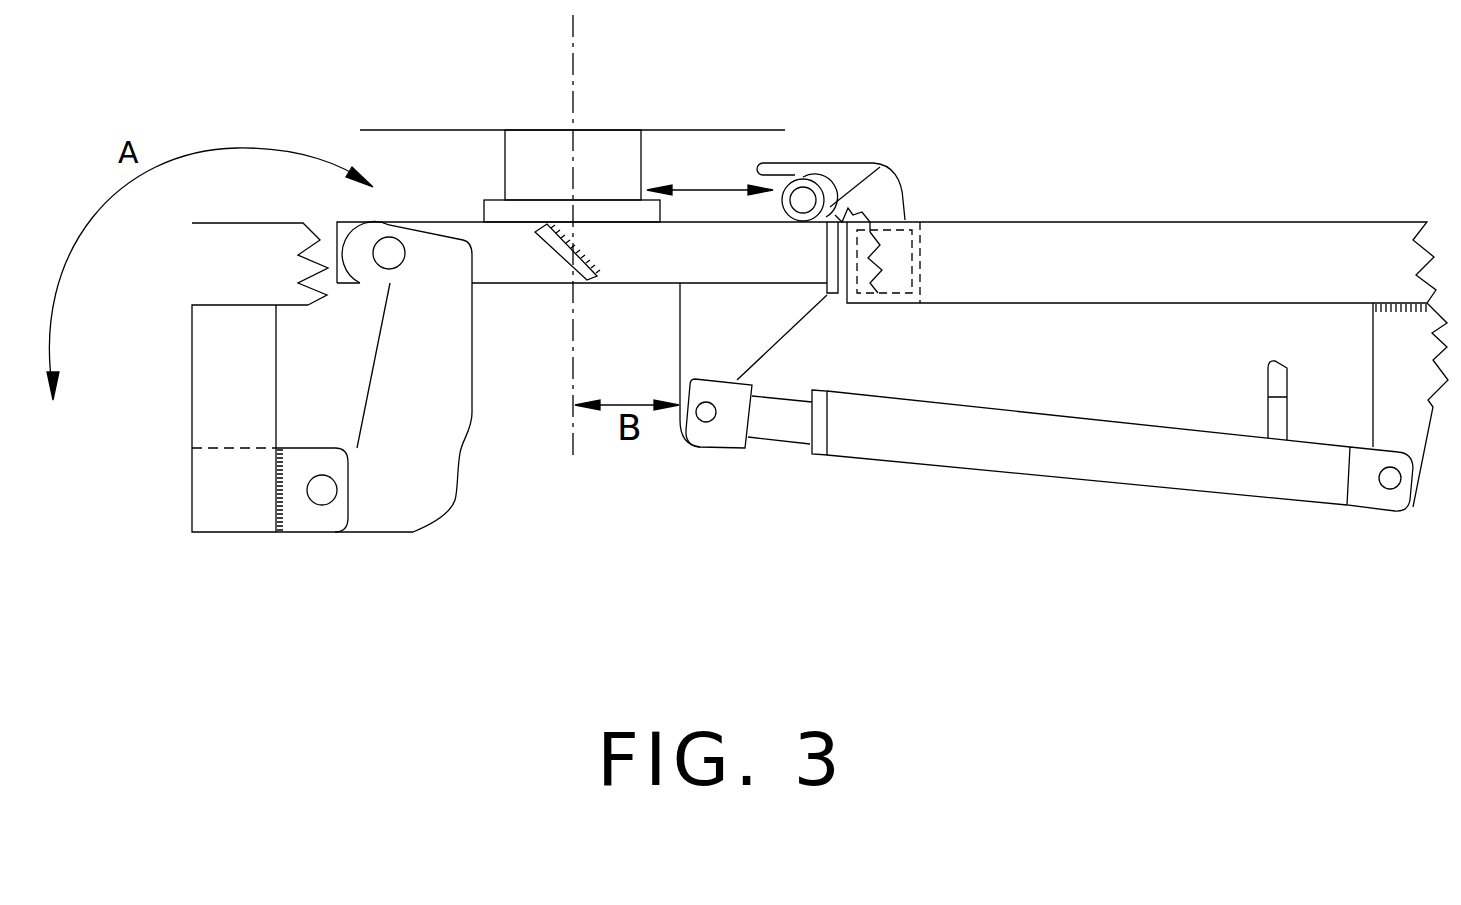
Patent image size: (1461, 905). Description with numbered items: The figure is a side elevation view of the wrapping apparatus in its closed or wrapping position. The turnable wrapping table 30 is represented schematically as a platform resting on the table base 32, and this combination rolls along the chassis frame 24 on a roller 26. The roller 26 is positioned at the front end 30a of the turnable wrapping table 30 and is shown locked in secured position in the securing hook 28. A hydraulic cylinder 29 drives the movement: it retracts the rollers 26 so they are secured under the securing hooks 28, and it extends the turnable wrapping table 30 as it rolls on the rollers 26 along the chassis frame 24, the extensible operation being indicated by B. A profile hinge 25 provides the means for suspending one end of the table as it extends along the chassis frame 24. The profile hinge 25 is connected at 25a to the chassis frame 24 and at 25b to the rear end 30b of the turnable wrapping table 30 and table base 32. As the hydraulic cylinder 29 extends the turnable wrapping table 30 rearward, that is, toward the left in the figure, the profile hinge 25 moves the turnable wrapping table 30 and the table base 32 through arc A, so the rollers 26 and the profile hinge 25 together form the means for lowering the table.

The chassis frame 24 is at (253, 222).
The profile hinge 25 is at (467, 453).
The connection of profile hinge to chassis frame 25a is at (312, 481).
The connection of profile hinge to table rear end 25b is at (373, 263).
The roller 26 is at (837, 193).
The securing hook 28 is at (850, 163).
The hydraulic cylinder 29 is at (1033, 474).
The turnable wrapping table 30 is at (603, 130).
The front end of turnable wrapping table 30a is at (717, 130).
The rear end of turnable wrapping table 30b is at (373, 130).
The table base 32 is at (503, 180).